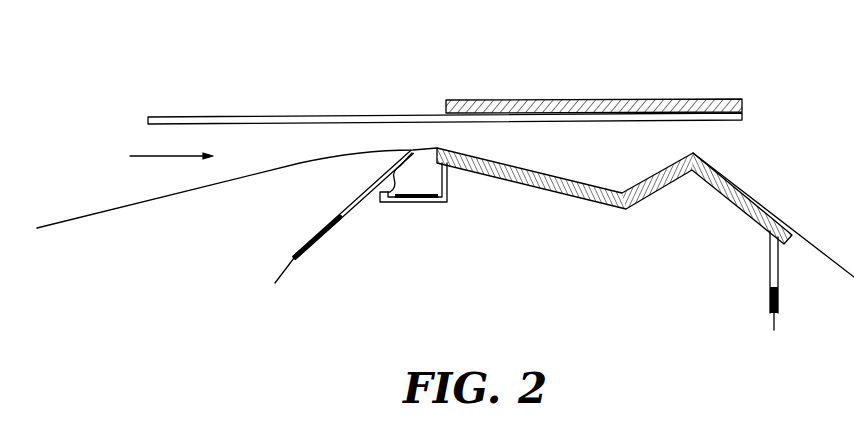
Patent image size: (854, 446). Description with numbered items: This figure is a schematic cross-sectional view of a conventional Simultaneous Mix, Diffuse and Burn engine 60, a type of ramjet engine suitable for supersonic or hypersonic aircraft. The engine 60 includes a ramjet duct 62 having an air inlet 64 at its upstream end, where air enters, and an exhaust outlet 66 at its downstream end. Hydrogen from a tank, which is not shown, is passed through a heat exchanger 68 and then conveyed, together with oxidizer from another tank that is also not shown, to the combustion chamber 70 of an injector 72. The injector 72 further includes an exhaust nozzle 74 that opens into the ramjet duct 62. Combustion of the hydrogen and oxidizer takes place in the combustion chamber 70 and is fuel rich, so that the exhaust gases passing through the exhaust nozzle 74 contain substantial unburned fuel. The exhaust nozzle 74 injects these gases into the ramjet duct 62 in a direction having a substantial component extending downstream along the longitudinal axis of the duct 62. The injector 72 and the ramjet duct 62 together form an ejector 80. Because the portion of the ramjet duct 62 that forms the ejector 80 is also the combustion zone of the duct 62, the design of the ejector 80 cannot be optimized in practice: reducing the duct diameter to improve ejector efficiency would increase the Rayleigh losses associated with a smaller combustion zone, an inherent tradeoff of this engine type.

The Simultaneous Mix, Diffuse and Burn (SimulMDB) engine 60 is at (582, 83).
The ramjet duct 62 is at (307, 142).
The air inlet 64 is at (215, 136).
The exhaust outlet 66 is at (678, 133).
The heat exchanger 68 is at (632, 108).
The combustion chamber 70 is at (382, 178).
The injector 72 is at (380, 199).
The exhaust nozzle 74 is at (413, 149).
The ejector 80 is at (477, 137).